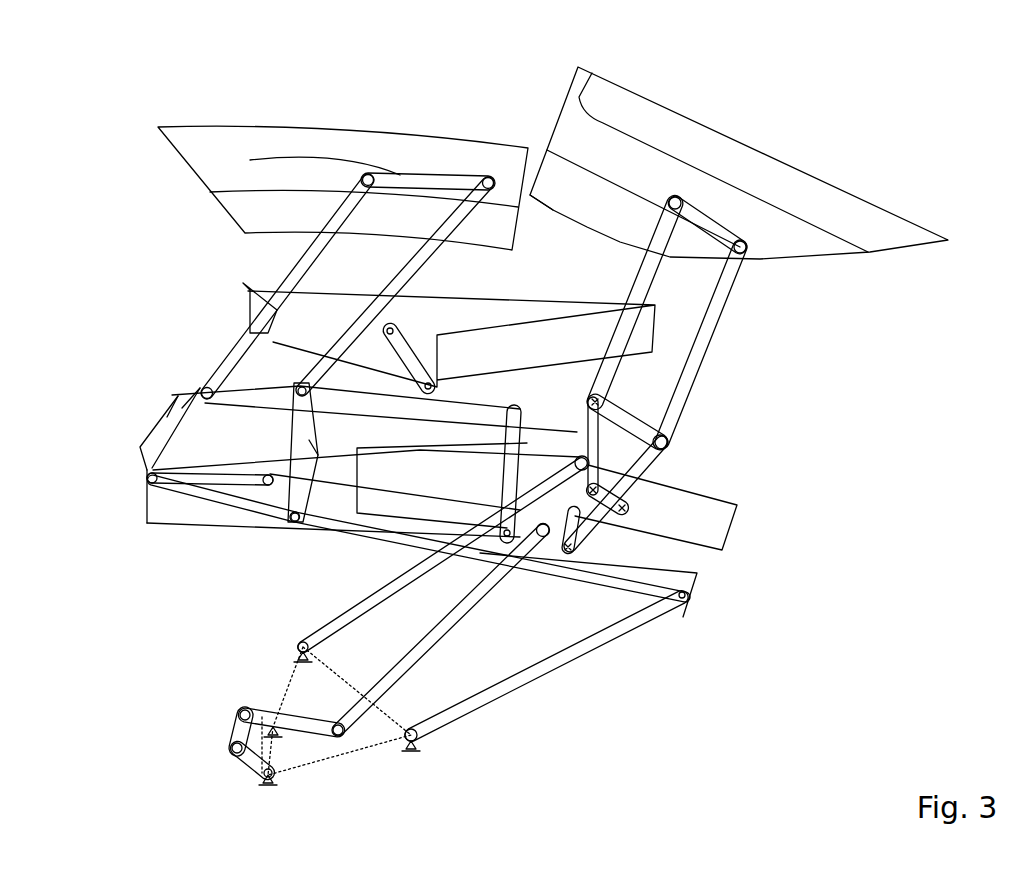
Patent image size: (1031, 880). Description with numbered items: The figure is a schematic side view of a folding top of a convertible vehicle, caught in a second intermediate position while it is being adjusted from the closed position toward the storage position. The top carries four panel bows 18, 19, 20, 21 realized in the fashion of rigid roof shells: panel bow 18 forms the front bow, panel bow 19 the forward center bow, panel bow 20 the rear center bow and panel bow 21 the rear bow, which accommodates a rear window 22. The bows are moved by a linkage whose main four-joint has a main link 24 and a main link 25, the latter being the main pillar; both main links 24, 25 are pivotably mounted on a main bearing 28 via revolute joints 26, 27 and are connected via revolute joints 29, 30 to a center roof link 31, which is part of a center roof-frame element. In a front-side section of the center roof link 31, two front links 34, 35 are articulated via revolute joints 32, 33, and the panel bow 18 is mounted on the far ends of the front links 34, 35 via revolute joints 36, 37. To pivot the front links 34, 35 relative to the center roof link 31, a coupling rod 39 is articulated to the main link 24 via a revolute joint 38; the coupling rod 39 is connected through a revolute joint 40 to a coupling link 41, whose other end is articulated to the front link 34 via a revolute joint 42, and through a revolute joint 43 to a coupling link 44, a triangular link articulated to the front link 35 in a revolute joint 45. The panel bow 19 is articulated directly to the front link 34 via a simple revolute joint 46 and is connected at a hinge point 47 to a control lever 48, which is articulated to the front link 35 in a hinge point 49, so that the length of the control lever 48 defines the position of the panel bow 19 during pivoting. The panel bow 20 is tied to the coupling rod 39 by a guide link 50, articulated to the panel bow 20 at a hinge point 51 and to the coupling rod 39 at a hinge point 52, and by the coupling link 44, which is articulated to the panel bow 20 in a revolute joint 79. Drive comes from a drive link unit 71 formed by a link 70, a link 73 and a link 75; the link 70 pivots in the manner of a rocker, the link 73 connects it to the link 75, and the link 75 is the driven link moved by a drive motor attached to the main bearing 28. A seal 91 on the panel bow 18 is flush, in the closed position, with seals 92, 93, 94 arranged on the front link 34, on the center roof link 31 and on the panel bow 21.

The panel bow 18 is at (215, 137).
The panel bow 19 is at (600, 323).
The panel bow 20 is at (710, 527).
The panel bow 21 is at (598, 140).
The rear window 22 is at (820, 210).
The main link 24 is at (508, 685).
The main link 25 is at (367, 613).
The revolute joint 26 is at (411, 735).
The revolute joint 27 is at (303, 645).
The main bearing 28 is at (362, 743).
The revolute joint 29 is at (681, 600).
The revolute joint 30 is at (575, 517).
The center roof link 31 is at (600, 577).
The revolute joint 32 is at (147, 478).
The revolute joint 33 is at (270, 482).
The front link 34 is at (307, 248).
The front link 35 is at (433, 258).
The revolute joint 36 is at (366, 178).
The revolute joint 37 is at (488, 180).
The revolute joint 38 is at (617, 437).
The coupling rod 39 is at (467, 410).
The revolute joint 40 is at (205, 392).
The coupling link 41 is at (182, 408).
The revolute joint 42 is at (167, 417).
The revolute joint 43 is at (302, 392).
The coupling link 44 is at (298, 420).
The revolute joint 45 is at (308, 458).
The revolute joint 46 is at (277, 337).
The hinge point 47 is at (430, 382).
The control lever 48 is at (407, 360).
The hinge point 49 is at (391, 328).
The guide link 50 is at (590, 463).
The hinge point 51 is at (506, 532).
The hinge point 52 is at (515, 413).
The drive link 70 is at (307, 727).
The drive link unit 71 is at (226, 751).
The link 73 is at (240, 733).
The link 75 is at (252, 760).
The revolute joint 79 is at (293, 517).
The seal 91 is at (278, 203).
The seal 92 is at (138, 445).
The seal 93 is at (157, 507).
The seal 94 is at (553, 180).